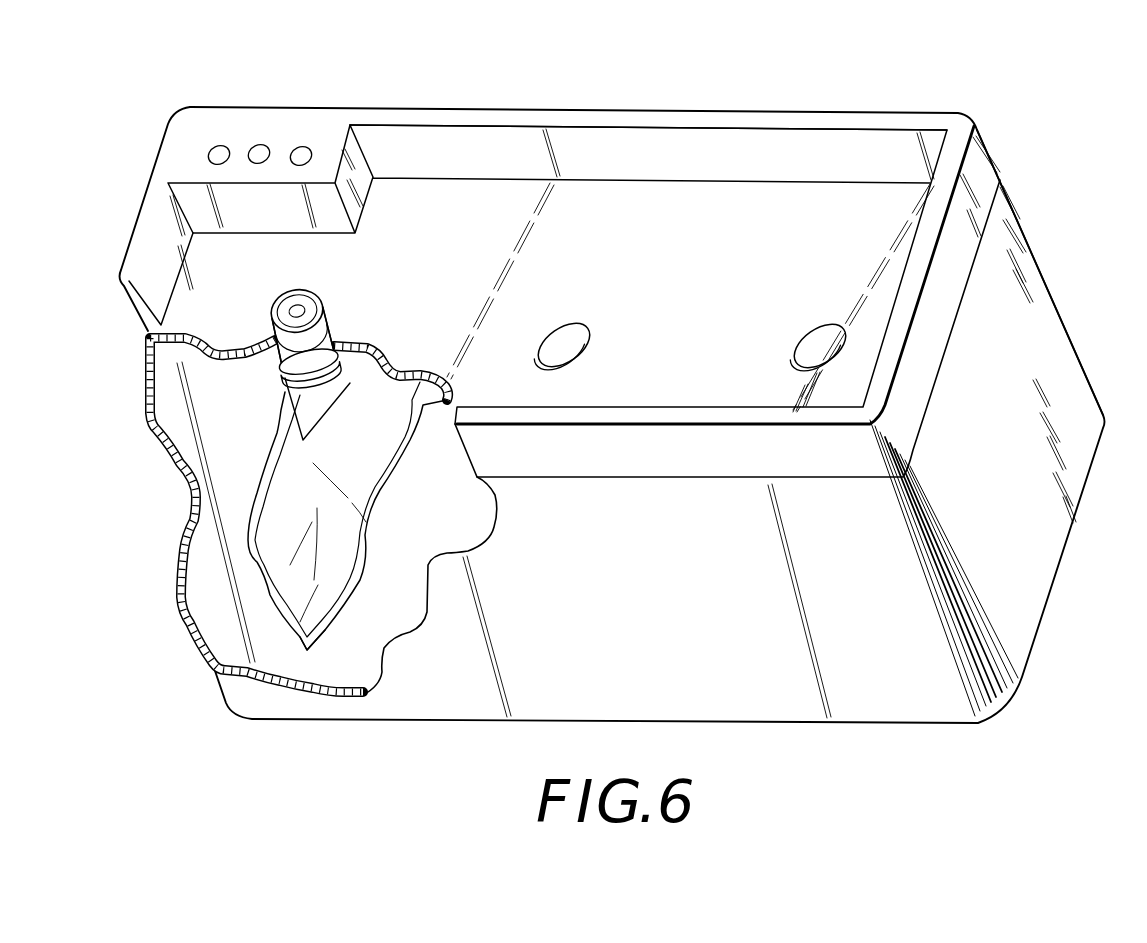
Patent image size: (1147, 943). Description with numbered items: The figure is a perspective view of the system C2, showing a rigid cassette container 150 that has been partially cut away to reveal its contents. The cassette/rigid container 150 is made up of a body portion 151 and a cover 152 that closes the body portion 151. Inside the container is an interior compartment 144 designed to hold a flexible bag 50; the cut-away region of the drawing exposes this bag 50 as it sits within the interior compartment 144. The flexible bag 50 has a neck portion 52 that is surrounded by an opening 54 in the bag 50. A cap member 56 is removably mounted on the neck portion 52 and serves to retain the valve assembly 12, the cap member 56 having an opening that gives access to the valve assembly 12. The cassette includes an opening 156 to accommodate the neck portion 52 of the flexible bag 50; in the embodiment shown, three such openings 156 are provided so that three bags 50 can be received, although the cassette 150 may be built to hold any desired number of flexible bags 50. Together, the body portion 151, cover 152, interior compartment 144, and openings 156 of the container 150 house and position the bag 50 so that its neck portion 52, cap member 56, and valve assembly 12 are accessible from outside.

The cassette/rigid container 150 is at (627, 383).
The body portion 151 is at (1043, 273).
The cover 152 is at (825, 122).
The opening 156 is at (562, 322).
The interior compartment 144 is at (449, 528).
The valve assembly 12 is at (294, 318).
The cap member 56 is at (297, 297).
The neck portion 52 is at (350, 352).
The flexible bag 50 is at (278, 468).
The opening in the bag 54 is at (347, 397).
The system C2 is at (314, 638).